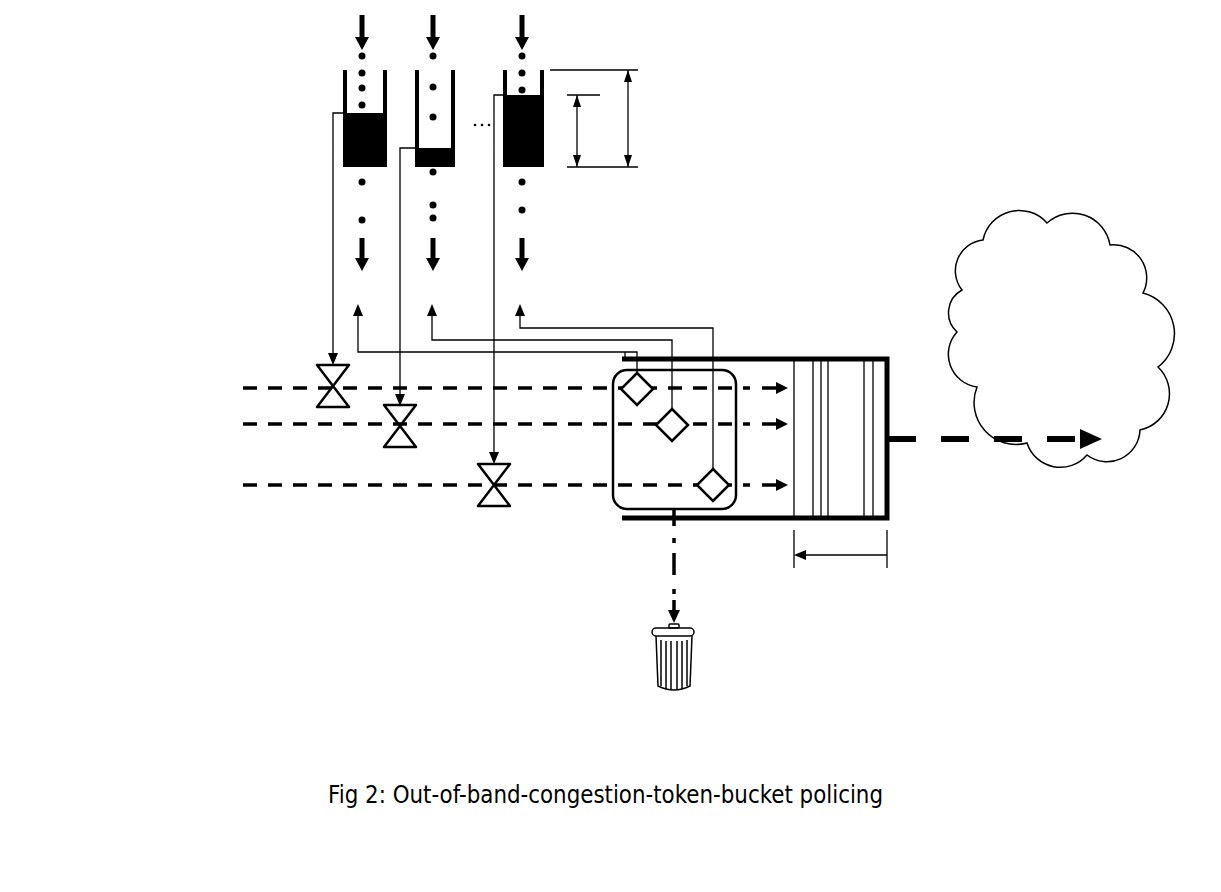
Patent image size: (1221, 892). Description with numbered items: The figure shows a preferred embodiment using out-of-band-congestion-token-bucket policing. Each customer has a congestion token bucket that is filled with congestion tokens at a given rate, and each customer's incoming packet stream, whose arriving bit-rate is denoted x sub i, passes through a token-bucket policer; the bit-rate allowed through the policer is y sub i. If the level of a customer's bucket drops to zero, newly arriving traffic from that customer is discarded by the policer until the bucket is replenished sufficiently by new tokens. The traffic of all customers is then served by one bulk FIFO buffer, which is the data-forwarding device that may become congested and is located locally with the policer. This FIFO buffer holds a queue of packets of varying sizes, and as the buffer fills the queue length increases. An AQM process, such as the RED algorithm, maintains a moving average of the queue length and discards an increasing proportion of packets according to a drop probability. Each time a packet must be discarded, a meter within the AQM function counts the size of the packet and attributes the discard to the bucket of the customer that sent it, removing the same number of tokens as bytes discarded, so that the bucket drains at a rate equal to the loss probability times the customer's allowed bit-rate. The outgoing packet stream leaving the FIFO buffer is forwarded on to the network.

The congestion token bucket is at (413, 154).
The incoming packet stream incoming is at (472, 475).
The token-bucket policer is at (464, 446).
The active queue management process AQM is at (610, 509).
The element meter is at (675, 437).
The first-in first-out buffer FIFO is at (754, 441).
The element queue is at (840, 553).
The outgoing packet stream outgoing is at (995, 475).
The element network is at (1061, 338).